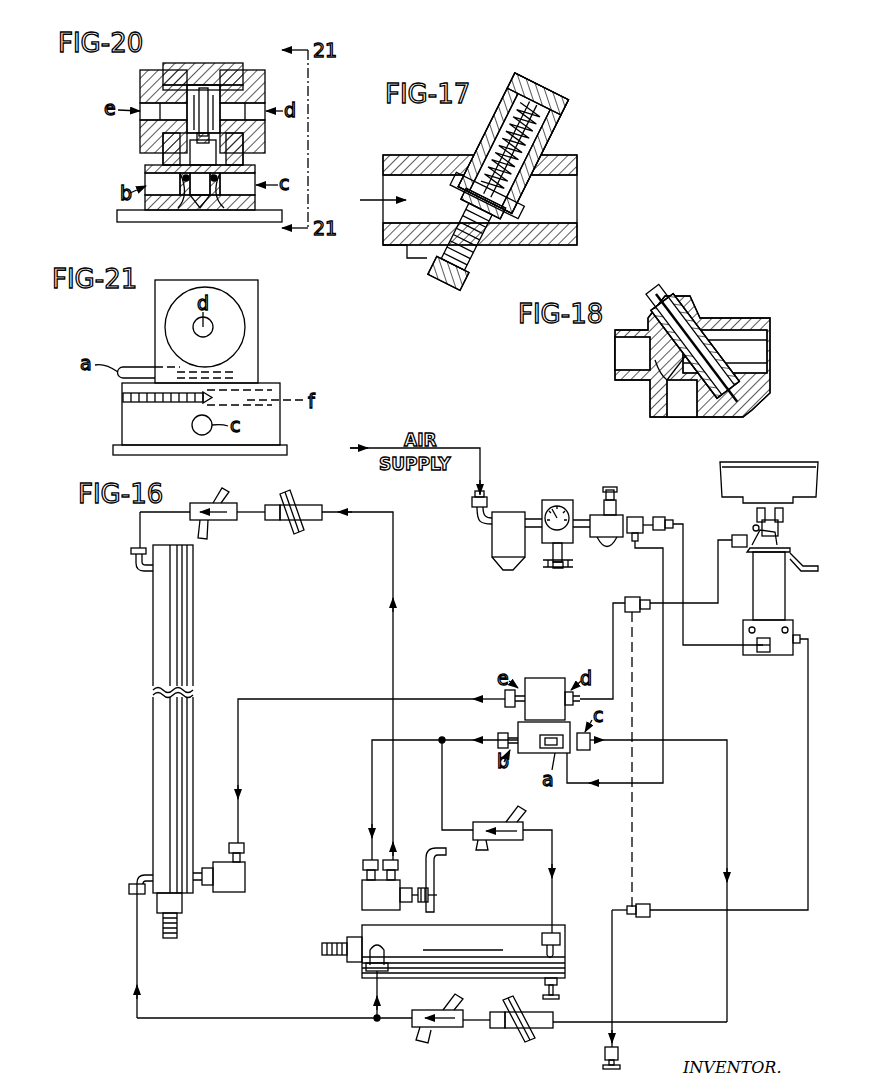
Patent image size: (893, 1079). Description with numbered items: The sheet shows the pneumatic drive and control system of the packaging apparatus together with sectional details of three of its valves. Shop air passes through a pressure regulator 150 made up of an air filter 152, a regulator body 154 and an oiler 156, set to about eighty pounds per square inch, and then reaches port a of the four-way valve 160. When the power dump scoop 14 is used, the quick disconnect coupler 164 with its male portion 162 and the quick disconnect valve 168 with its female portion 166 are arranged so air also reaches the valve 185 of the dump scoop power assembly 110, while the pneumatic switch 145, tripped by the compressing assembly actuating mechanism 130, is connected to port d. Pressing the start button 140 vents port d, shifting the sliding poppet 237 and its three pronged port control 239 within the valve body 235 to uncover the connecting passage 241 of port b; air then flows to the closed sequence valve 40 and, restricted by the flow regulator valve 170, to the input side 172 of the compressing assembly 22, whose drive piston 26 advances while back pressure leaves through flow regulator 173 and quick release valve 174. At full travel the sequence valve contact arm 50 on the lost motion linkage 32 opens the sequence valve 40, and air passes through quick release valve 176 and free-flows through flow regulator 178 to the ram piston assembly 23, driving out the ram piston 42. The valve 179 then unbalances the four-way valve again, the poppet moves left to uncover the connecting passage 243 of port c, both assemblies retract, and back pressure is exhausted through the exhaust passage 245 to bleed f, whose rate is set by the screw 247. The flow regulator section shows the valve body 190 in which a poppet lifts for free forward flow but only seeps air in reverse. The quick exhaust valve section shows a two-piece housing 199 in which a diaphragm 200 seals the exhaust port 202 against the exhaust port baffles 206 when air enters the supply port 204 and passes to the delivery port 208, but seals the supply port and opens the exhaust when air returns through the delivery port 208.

In FIG. 16, the dump scoop 14 is at (760, 468).
In FIG. 16, the compressing assembly 22 is at (498, 933).
In FIG. 16, the ram piston assembly 23 is at (160, 643).
In FIG. 16, the drive piston 26 is at (332, 957).
In FIG. 16, the lost motion linkage 32 is at (444, 869).
In FIG. 16, the sequence valve 40 is at (365, 892).
In FIG. 16, the ram piston 42 is at (178, 918).
In FIG. 16, the sequence valve contact arm 50 is at (419, 888).
In FIG. 16, the dump scoop power assembly 110 is at (780, 579).
In FIG. 16, the compressing assembly actuating mechanism 130 is at (781, 531).
In FIG. 16, the start button 140 is at (605, 1053).
In FIG. 16, the pneumatic switch 145 is at (740, 535).
In FIG. 16, the pressure regulator 150 is at (557, 500).
In FIG. 16, the air filter 152 is at (492, 541).
In FIG. 16, the regulator body 154 is at (558, 570).
In FIG. 16, the oiler 156 is at (618, 517).
In FIG. 16, the four-way valve 160 is at (540, 688).
In FIG. 16, the male portion 162 is at (630, 906).
In FIG. 16, the quick disconnect coupler 164 is at (643, 922).
In FIG. 16, the female portion 166 is at (630, 597).
In FIG. 16, the quick disconnect valve 168 is at (624, 611).
In FIG. 16, the flow regulator valve 170 is at (500, 820).
In FIG. 16, the input side 172 is at (561, 937).
In FIG. 16, the flow regulator 173 is at (428, 1041).
In FIG. 16, the quick release valve 174 is at (510, 1030).
In FIG. 16, the quick release valve 176 is at (290, 527).
In FIG. 16, the flow regulator 178 is at (217, 523).
In FIG. 16, the valve 179 is at (240, 878).
In FIG. 16, the valve 185 is at (782, 657).
In FIG. 17, the valve body 190 is at (505, 238).
In FIG. 18, the two-piece housing 199 is at (755, 398).
In FIG. 18, the diaphragm 200 is at (690, 325).
In FIG. 18, the exhaust port 202 is at (681, 418).
In FIG. 18, the supply port 204 is at (755, 350).
In FIG. 18, the exhaust port baffles 206 is at (655, 385).
In FIG. 18, the delivery port 208 is at (615, 355).
In FIG. 20, the body 235 is at (140, 78).
In FIG. 20, the sliding poppet 237 is at (208, 86).
In FIG. 20, the three pronged port control 239 is at (175, 145).
In FIG. 20, the connecting passage 241 is at (182, 175).
In FIG. 20, the connecting passage 243 is at (218, 175).
In FIG. 20, the exhaust passage 245 is at (186, 180).
In FIG. 21, the exhaust passage 245 is at (220, 384).
In FIG. 20, the screw 247 is at (196, 185).
In FIG. 21, the screw 247 is at (132, 403).